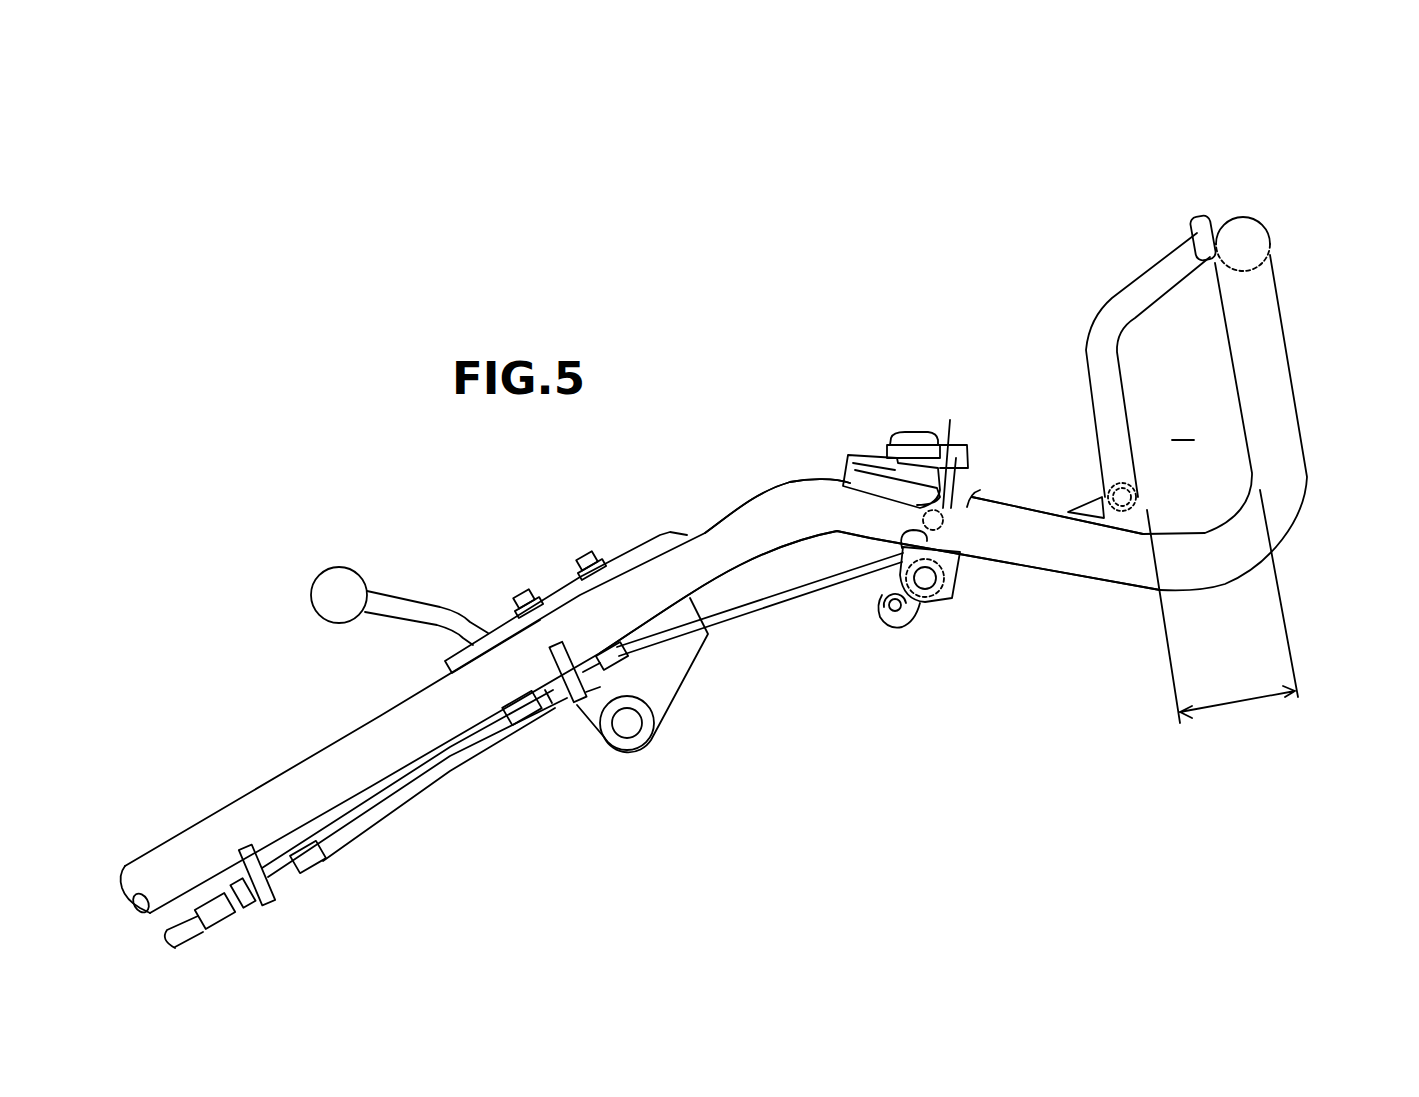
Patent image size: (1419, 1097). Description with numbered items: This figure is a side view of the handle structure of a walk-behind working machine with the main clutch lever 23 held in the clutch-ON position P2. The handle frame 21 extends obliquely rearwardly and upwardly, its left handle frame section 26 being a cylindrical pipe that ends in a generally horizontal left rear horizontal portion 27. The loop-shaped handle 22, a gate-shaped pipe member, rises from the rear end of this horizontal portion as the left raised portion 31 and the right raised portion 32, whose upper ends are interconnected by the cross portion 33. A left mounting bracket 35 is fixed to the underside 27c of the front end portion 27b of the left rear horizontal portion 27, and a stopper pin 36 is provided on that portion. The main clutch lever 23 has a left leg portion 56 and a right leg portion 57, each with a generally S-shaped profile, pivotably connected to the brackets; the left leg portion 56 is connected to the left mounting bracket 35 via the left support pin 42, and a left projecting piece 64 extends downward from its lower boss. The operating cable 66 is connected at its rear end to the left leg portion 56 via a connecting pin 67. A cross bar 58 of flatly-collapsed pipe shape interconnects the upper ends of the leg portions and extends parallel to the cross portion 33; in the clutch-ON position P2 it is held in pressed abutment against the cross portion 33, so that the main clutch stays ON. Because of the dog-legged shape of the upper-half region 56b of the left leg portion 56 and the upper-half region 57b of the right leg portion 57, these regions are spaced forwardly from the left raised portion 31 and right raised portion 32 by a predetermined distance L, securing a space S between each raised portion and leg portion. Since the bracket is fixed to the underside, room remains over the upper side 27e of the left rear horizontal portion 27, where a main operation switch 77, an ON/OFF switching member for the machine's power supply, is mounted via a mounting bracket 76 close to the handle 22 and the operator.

The handle frame 21 is at (280, 703).
The loop-shaped handle 22 is at (1276, 381).
The main clutch lever 23 is at (1074, 305).
The left handle frame section 26 is at (229, 782).
The left rear horizontal portion 27 is at (880, 539).
The front end portion 27b is at (810, 485).
The underside 27c is at (873, 543).
The upper side 27e is at (957, 503).
The left raised portion 31 is at (1271, 422).
The right raised portion 32 is at (1283, 423).
The cross portion 33 is at (1247, 233).
The left mounting bracket 35 is at (957, 573).
The stopper pin 36 is at (950, 420).
The left support pin 42 is at (927, 587).
The left leg portion 56 is at (1064, 341).
The right leg portion 57 is at (1064, 341).
The upper-half region 56b is at (1064, 365).
The upper-half region 57b is at (1092, 367).
The cross bar 58 is at (1195, 225).
The left projecting piece 64 is at (892, 628).
The operating cable 66 is at (437, 763).
The connecting pin 67 is at (1136, 498).
The mounting bracket 76 is at (862, 485).
The main operation switch 77 is at (903, 437).
The clutch-ON position P2 is at (1211, 217).
The space S is at (1183, 423).
The predetermined distance L is at (1222, 617).